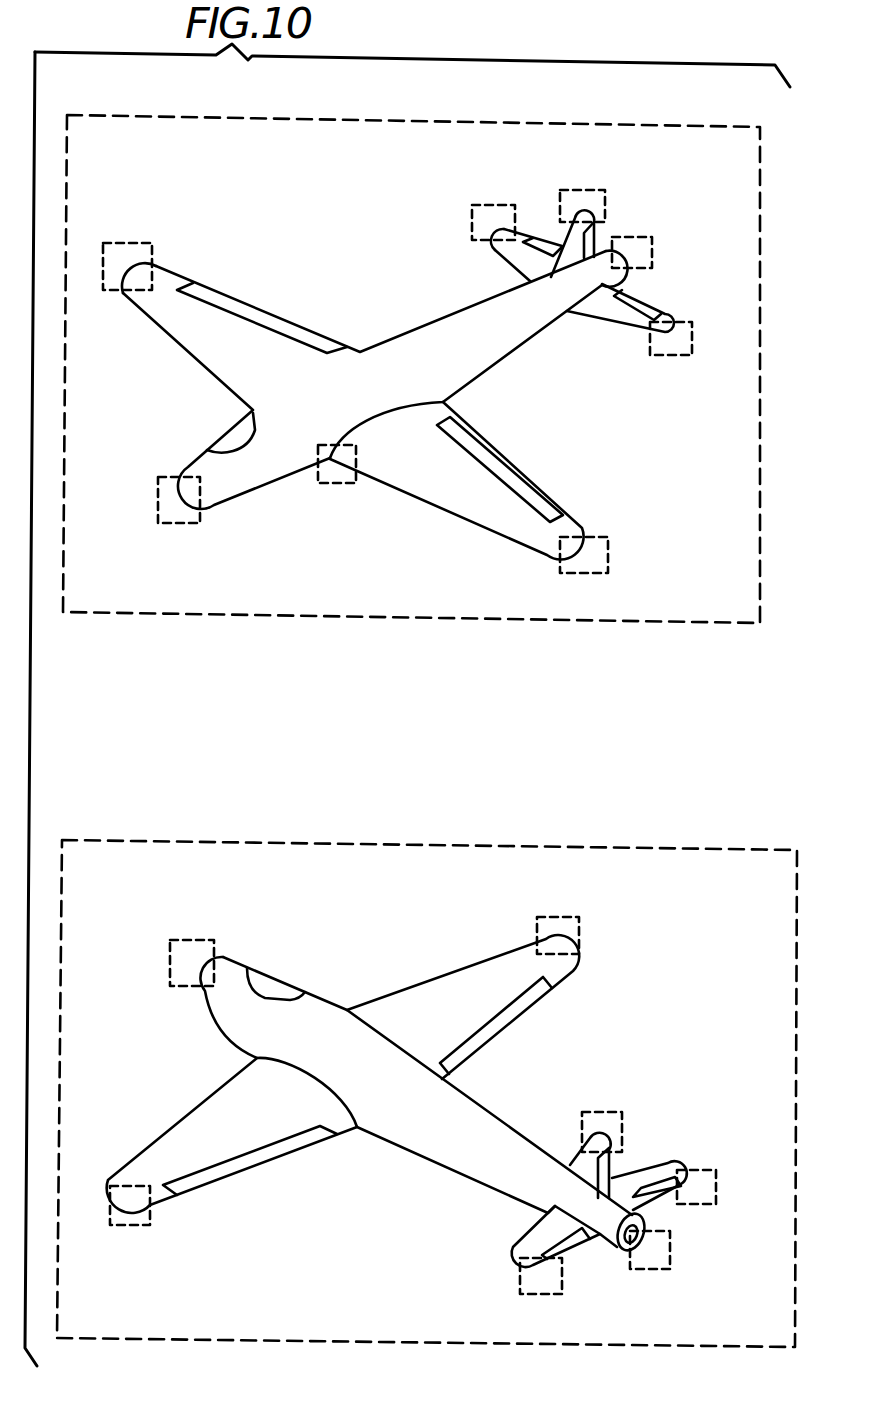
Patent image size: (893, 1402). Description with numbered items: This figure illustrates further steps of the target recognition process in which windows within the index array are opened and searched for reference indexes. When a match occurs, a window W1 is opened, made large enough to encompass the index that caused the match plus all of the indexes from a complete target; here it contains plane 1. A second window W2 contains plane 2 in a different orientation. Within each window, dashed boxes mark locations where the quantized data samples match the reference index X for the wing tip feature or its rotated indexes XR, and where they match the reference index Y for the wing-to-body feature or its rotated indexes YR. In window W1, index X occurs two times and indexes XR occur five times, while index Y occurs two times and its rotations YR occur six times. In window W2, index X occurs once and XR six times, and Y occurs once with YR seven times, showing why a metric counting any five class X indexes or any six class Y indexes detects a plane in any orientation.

The window W1 is at (691, 124).
The window W2 is at (708, 847).
The plane # 1 is at (398, 384).
The plane # 2 is at (397, 1101).
The reference index X is at (122, 241).
The rotated reference indexes XR is at (178, 525).
The reference index Y is at (336, 485).
The rotated reference indexes YR is at (251, 410).